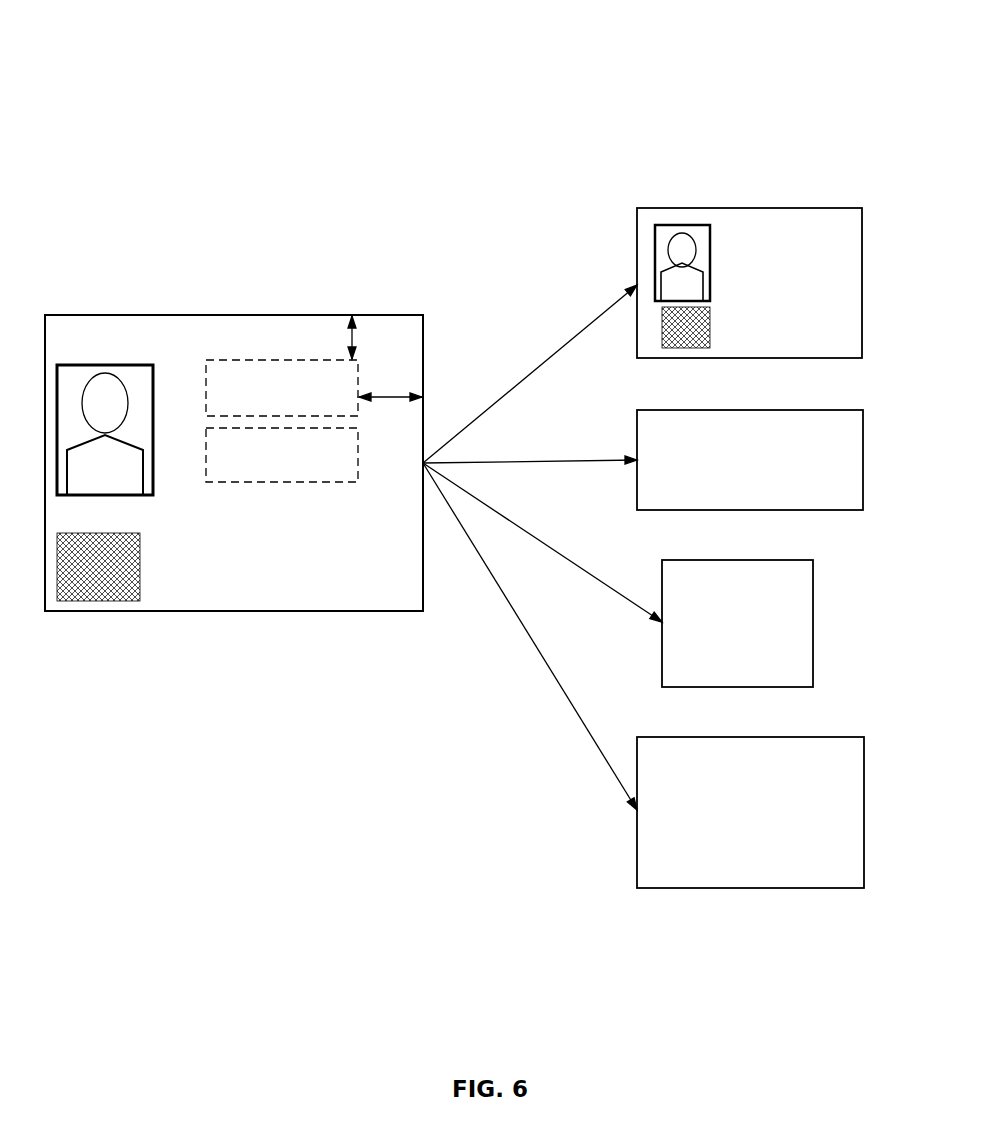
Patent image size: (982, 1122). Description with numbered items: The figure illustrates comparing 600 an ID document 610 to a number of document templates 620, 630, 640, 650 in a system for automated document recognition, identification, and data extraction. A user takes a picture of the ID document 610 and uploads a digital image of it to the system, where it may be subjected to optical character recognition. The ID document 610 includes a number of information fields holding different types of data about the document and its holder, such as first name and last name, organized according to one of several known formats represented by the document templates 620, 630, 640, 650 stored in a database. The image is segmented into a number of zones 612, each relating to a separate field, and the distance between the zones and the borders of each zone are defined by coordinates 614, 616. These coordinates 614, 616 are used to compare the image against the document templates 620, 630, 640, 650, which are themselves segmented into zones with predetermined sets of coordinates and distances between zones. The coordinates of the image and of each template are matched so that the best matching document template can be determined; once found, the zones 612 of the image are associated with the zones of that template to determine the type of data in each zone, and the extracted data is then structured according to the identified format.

The comparing 600 is at (834, 56).
The ID document 610 is at (140, 315).
The zones 612 is at (297, 428).
The coordinate (x) 614 is at (400, 395).
The coordinate (y) 616 is at (357, 335).
The document template 620 is at (743, 208).
The document template 630 is at (716, 422).
The document template 640 is at (773, 603).
The document template 650 is at (782, 750).